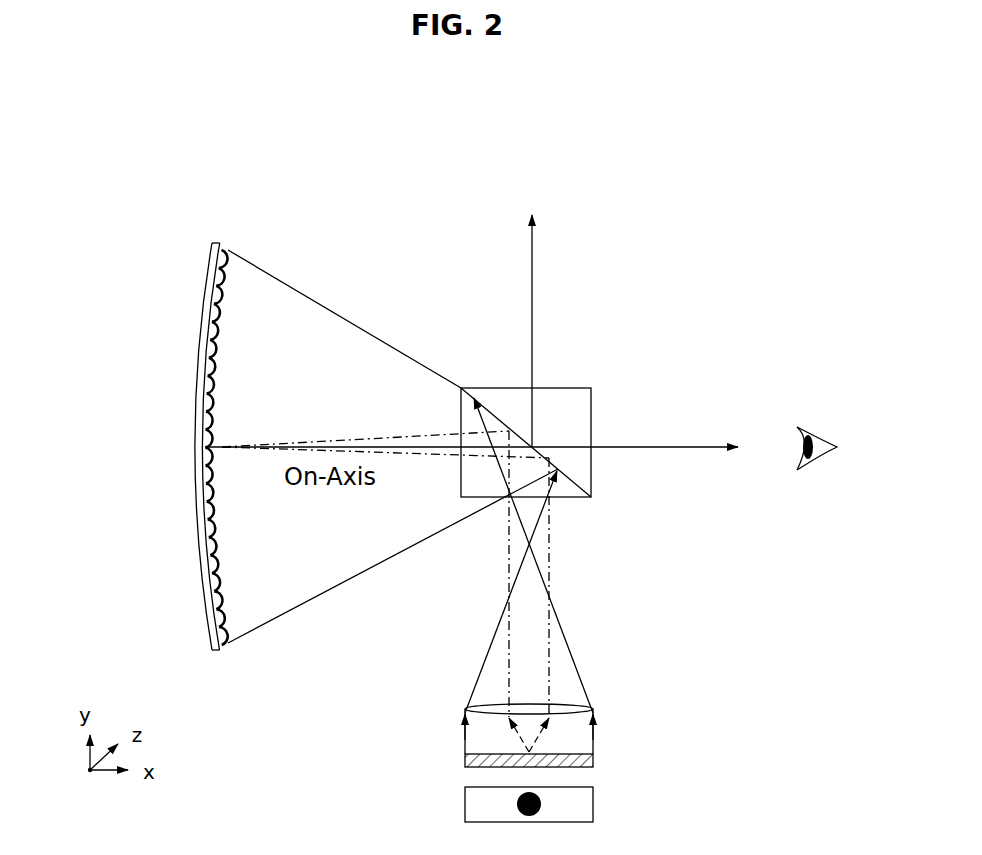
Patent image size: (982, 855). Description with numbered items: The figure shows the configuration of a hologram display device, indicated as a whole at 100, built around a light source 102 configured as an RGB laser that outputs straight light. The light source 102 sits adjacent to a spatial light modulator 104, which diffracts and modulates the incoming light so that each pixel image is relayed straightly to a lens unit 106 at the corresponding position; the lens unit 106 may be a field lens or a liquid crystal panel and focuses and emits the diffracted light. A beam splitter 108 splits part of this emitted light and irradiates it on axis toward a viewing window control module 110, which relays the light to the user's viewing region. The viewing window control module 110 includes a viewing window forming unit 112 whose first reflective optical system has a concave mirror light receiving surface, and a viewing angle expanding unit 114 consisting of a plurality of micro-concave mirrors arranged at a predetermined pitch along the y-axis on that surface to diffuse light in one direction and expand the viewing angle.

The display apparatus 100 is at (733, 265).
The light source 102 is at (593, 801).
The spatial light modulator 104 is at (593, 762).
The lens unit 106 is at (585, 702).
The beam splitter 108 is at (591, 404).
The viewing window control module 110 is at (183, 436).
The viewing window forming unit 112 is at (200, 348).
The viewing angle expanding unit 114 is at (209, 378).